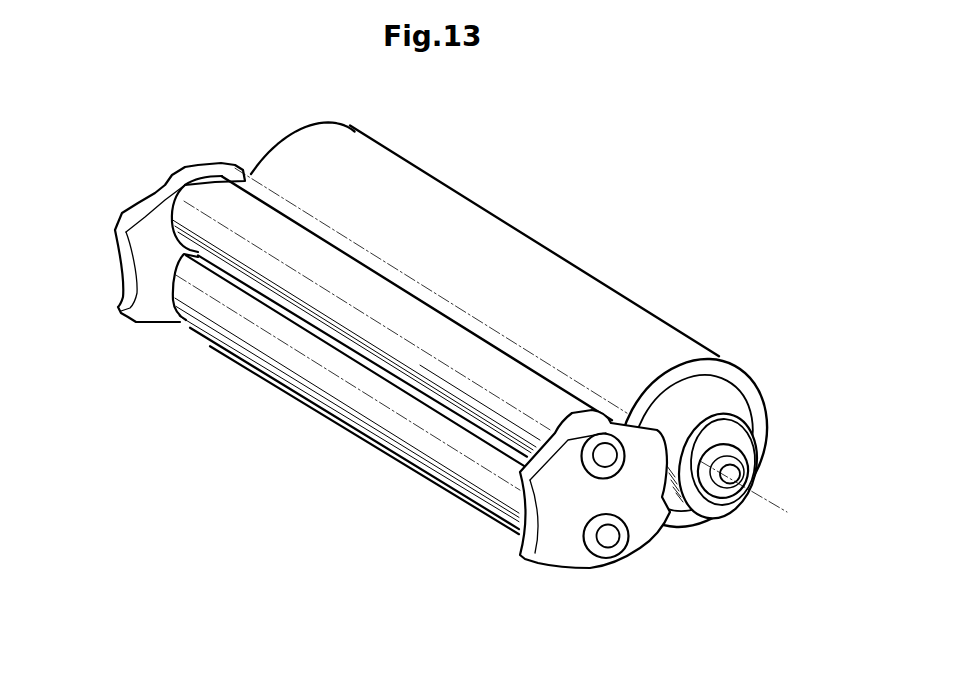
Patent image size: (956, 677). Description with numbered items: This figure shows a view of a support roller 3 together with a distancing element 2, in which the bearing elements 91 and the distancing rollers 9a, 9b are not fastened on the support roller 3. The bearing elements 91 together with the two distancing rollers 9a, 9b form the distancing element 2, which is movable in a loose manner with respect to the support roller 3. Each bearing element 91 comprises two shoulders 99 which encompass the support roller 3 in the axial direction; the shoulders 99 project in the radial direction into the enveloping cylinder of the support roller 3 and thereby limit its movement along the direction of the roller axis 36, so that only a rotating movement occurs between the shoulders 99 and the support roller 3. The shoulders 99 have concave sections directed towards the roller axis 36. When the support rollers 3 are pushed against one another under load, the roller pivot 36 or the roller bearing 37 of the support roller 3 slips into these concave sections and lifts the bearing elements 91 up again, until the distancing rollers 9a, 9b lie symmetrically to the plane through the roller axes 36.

The distancing element 2 is at (165, 147).
The support roller 3 is at (510, 247).
The distancing roller 9a is at (378, 325).
The distancing roller 9b is at (378, 433).
The bearing element 91 is at (132, 292).
The shoulder 99 is at (548, 553).
The roller bearing 37 is at (681, 500).
The roller axis 36 is at (750, 485).